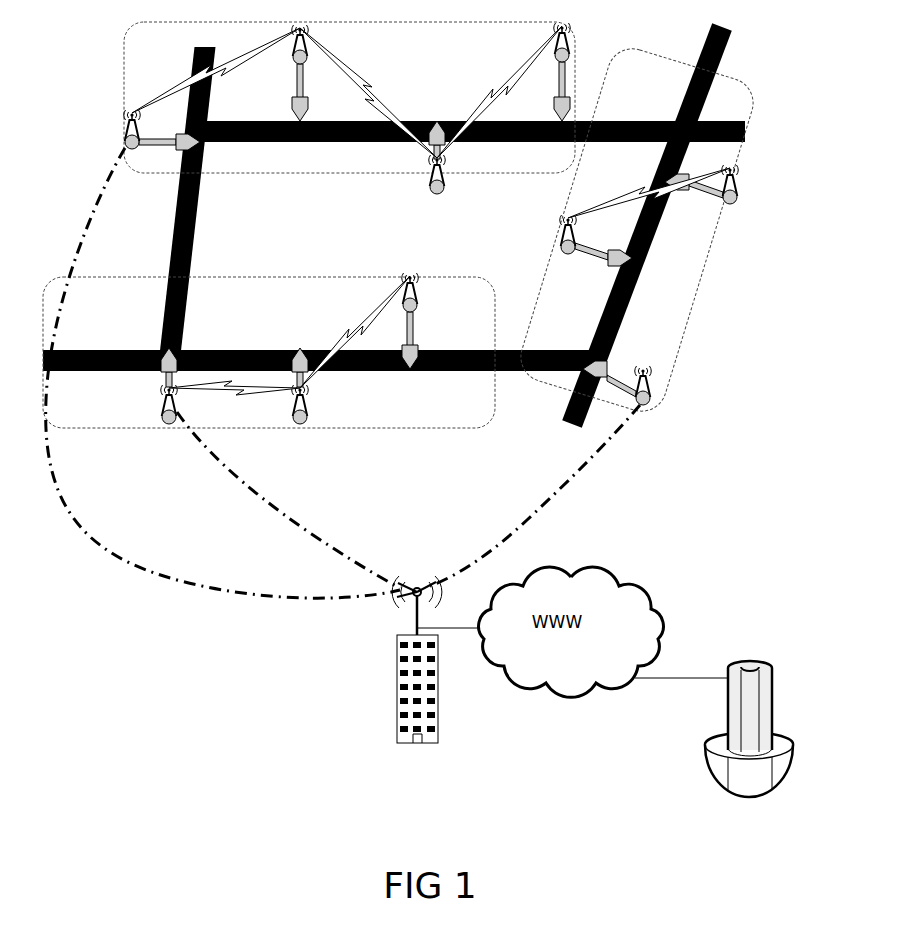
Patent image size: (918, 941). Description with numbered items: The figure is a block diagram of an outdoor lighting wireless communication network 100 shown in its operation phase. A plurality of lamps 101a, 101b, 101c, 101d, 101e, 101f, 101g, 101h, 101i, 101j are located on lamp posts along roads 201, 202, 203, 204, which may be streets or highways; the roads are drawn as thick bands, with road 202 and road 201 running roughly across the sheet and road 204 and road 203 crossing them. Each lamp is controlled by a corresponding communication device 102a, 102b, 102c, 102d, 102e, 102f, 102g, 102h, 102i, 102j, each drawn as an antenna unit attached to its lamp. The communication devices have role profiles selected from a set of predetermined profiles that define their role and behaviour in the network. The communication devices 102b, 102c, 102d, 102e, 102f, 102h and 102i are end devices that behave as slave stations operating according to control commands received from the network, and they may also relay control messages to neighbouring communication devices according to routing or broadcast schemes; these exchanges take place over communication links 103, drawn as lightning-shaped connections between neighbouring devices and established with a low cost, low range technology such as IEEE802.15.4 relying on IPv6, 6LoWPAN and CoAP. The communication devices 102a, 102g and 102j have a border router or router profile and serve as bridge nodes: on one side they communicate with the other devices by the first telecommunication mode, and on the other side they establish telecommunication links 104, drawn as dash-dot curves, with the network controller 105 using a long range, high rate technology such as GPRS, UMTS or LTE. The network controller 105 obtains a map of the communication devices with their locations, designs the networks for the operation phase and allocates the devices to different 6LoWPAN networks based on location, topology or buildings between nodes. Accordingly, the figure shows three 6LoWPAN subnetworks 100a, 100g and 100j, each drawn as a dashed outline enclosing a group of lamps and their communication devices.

The network 100 is at (413, 242).
The 6LoWPAN subnetwork 100a is at (217, 177).
The 6LoWPAN subnetwork 100g is at (697, 297).
The 6LoWPAN subnetwork 100j is at (266, 430).
The lamp 101a is at (183, 148).
The lamp 101b is at (300, 110).
The lamp 101c is at (442, 138).
The lamp 101d is at (553, 103).
The lamp 101e is at (680, 187).
The lamp 101f is at (618, 255).
The lamp 101g is at (607, 367).
The lamp 101h is at (422, 372).
The lamp 101i is at (308, 372).
The lamp 101j is at (152, 372).
The communication device 102a is at (130, 113).
The communication device 102b is at (298, 40).
The communication device 102c is at (430, 167).
The communication device 102d is at (558, 42).
The communication device 102e is at (733, 178).
The communication device 102f is at (562, 225).
The communication device 102g is at (647, 383).
The communication device 102h is at (415, 292).
The communication device 102i is at (303, 418).
The communication device 102j is at (162, 418).
The communication link 103 is at (431, 221).
The telecommunication link 104 is at (343, 373).
The network controller 105 is at (749, 741).
The road 201 is at (732, 33).
The road 202 is at (190, 273).
The road 203 is at (455, 350).
The road 204 is at (328, 143).